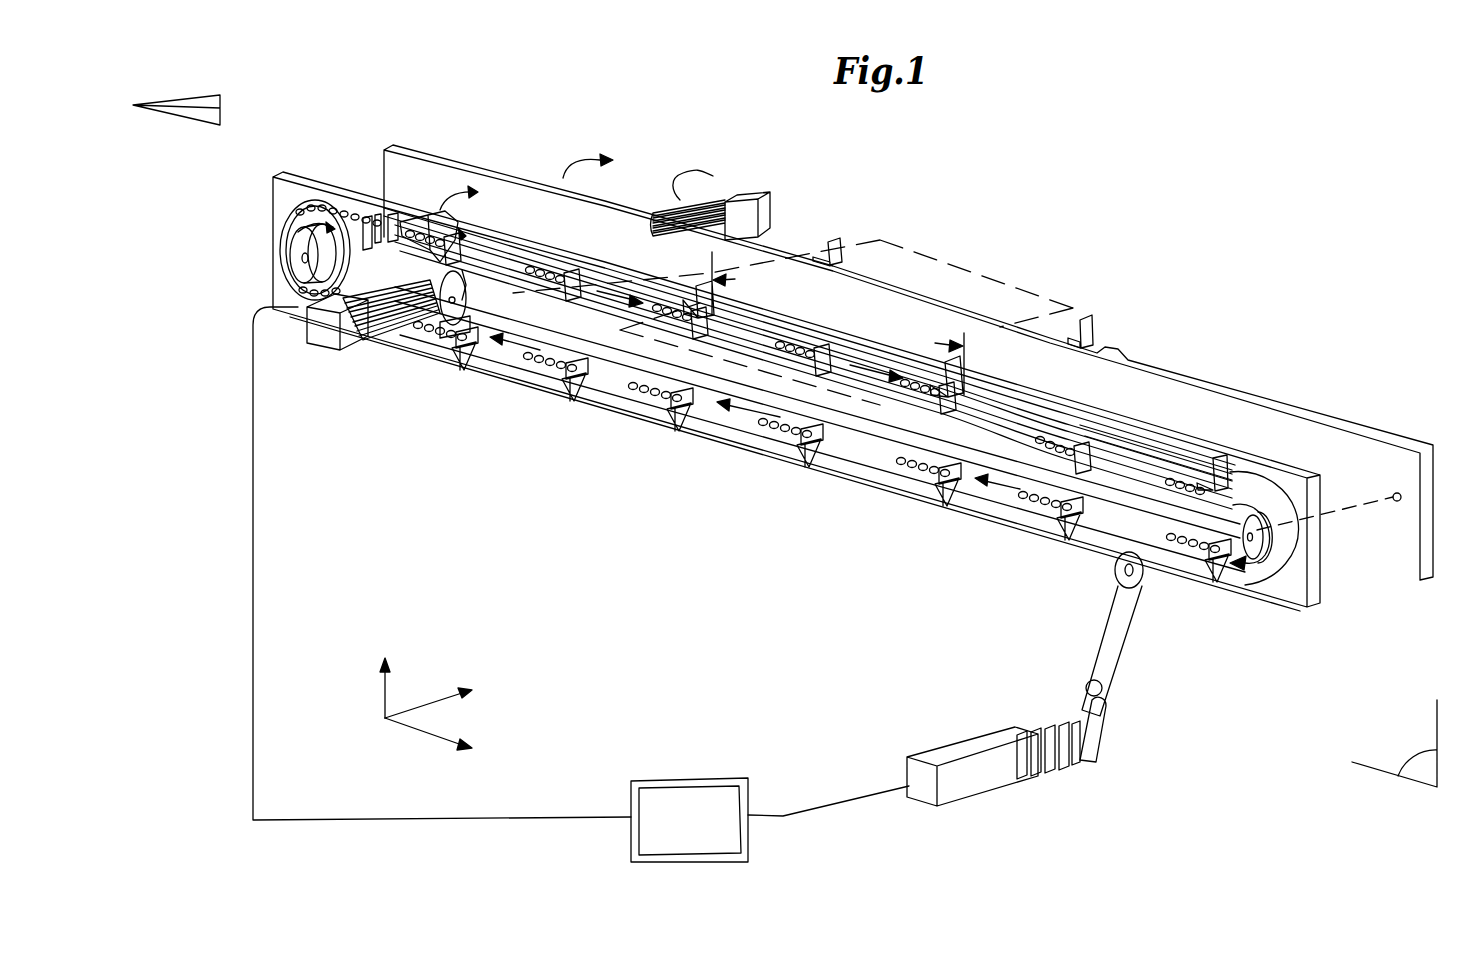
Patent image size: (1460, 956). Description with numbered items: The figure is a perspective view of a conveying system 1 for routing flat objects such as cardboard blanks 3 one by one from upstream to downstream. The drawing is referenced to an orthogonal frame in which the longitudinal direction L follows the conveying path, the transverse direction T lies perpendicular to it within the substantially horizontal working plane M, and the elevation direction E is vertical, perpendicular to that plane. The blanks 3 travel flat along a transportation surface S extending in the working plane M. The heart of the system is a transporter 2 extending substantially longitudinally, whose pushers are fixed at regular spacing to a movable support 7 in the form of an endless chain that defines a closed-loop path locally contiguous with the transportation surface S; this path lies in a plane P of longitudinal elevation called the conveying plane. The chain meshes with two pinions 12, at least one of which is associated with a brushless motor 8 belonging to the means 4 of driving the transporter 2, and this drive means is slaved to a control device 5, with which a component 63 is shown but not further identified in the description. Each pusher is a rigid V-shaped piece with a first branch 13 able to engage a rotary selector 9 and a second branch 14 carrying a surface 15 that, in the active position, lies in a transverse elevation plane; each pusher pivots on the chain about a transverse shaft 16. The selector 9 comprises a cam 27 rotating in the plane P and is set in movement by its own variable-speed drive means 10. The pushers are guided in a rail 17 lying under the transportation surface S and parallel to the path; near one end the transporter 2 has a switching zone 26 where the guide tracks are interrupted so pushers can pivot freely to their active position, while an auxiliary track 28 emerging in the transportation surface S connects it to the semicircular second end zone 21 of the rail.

The conveying system 1 is at (978, 242).
The transporter 2 is at (260, 272).
The cardboard blanks 3 is at (1034, 300).
The means of driving the transporter 4 is at (990, 778).
The control device 5 is at (719, 795).
The controller 63 is at (735, 800).
The movable support 7 is at (530, 362).
The motor 8 is at (391, 347).
The drive means 10 is at (326, 345).
The selector 9 is at (466, 262).
The cam 27 is at (511, 206).
The pinions 12 is at (298, 270).
The first branch 13 is at (381, 205).
The second branch 14 is at (347, 205).
The surface 15 is at (845, 248).
The transverse shaft 16 is at (612, 268).
The rail 17 is at (775, 430).
The second end zone 21 is at (1279, 559).
The switching zone 26 is at (427, 200).
The auxiliary track 28 is at (1160, 455).
The transportation surface S is at (778, 252).
The working plane M is at (191, 110).
The elevation direction E is at (382, 675).
The transverse direction T is at (444, 697).
The longitudinal direction L is at (442, 741).
The conveying plane P is at (1394, 743).